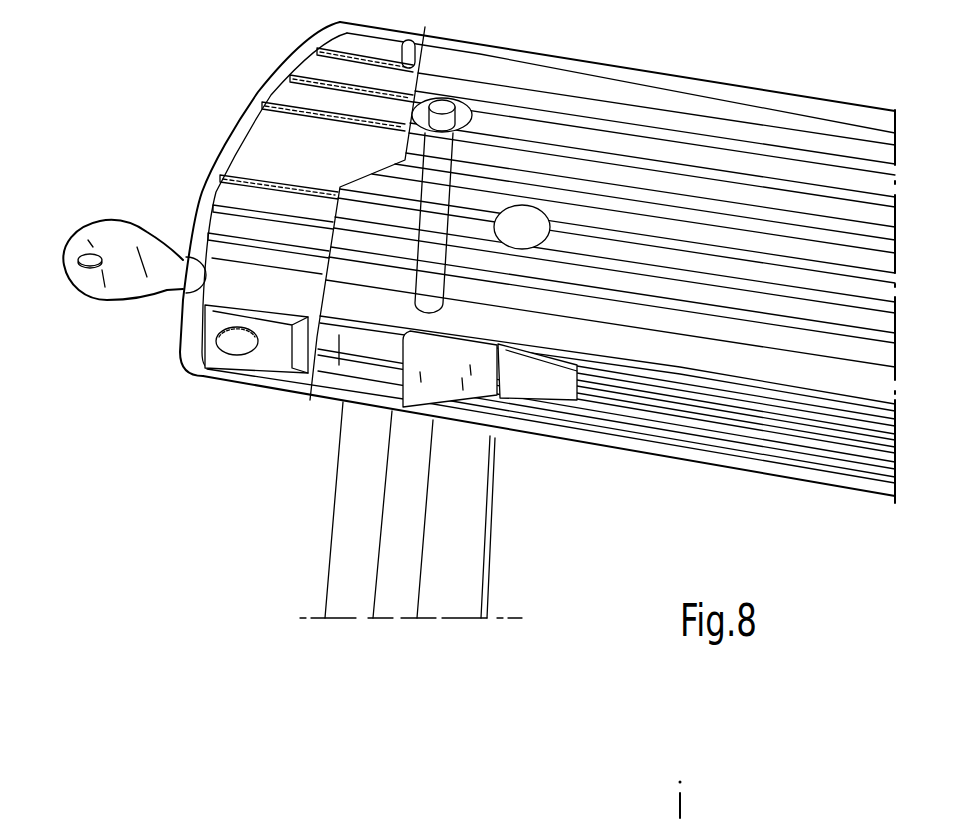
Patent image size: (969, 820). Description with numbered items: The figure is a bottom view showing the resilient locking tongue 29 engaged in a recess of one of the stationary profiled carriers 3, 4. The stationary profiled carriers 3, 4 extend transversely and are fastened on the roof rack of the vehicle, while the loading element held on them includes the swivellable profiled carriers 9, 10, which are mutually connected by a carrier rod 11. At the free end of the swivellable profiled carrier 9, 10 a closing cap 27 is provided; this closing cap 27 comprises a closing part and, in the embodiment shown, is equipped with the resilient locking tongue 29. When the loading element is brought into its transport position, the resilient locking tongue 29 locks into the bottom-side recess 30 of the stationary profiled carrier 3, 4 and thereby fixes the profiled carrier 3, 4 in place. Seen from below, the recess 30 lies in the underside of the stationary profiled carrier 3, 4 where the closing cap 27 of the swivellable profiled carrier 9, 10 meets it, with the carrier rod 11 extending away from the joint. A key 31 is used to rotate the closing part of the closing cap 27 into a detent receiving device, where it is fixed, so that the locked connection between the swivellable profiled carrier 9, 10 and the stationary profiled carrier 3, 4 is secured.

The swivellable profiled carrier 9 is at (602, 262).
The swivellable profiled carrier 10 is at (748, 112).
The profiled carrier 3 is at (549, 441).
The profiled carrier 4 is at (795, 463).
The closing cap 27 is at (258, 153).
The resilient locking tongue 29 is at (417, 400).
The bottom-side recess 30 is at (557, 380).
The key 31 is at (130, 281).
The carrier rod 11 is at (453, 590).